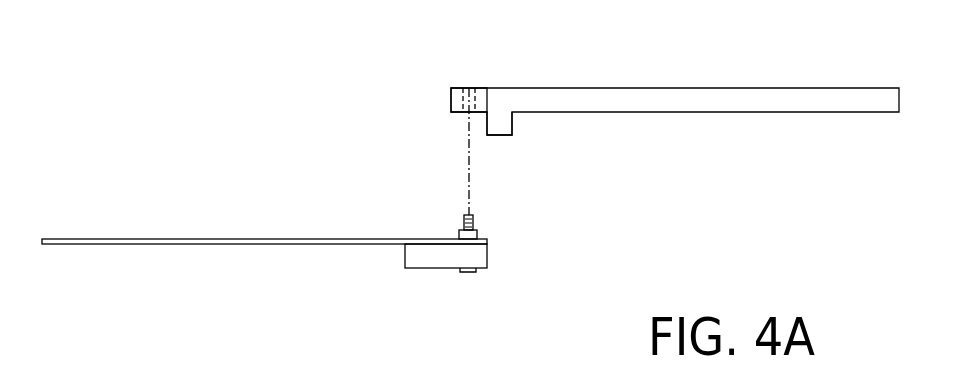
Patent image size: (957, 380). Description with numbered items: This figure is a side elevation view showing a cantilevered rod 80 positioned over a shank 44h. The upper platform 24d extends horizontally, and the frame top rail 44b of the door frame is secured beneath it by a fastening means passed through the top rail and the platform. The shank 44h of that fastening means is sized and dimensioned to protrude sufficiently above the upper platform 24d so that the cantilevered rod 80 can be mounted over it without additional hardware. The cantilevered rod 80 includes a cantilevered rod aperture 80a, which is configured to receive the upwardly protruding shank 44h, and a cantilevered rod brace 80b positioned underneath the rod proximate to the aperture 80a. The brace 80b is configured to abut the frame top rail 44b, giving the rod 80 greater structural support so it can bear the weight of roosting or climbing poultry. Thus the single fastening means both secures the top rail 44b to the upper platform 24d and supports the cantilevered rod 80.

The cantilevered rod 80 is at (697, 88).
The cantilevered rod aperture 80a is at (469, 88).
The cantilevered rod brace 80b is at (514, 124).
The upper platform 24d is at (233, 239).
The frame top rail 44b is at (415, 258).
The shank 44h is at (474, 222).